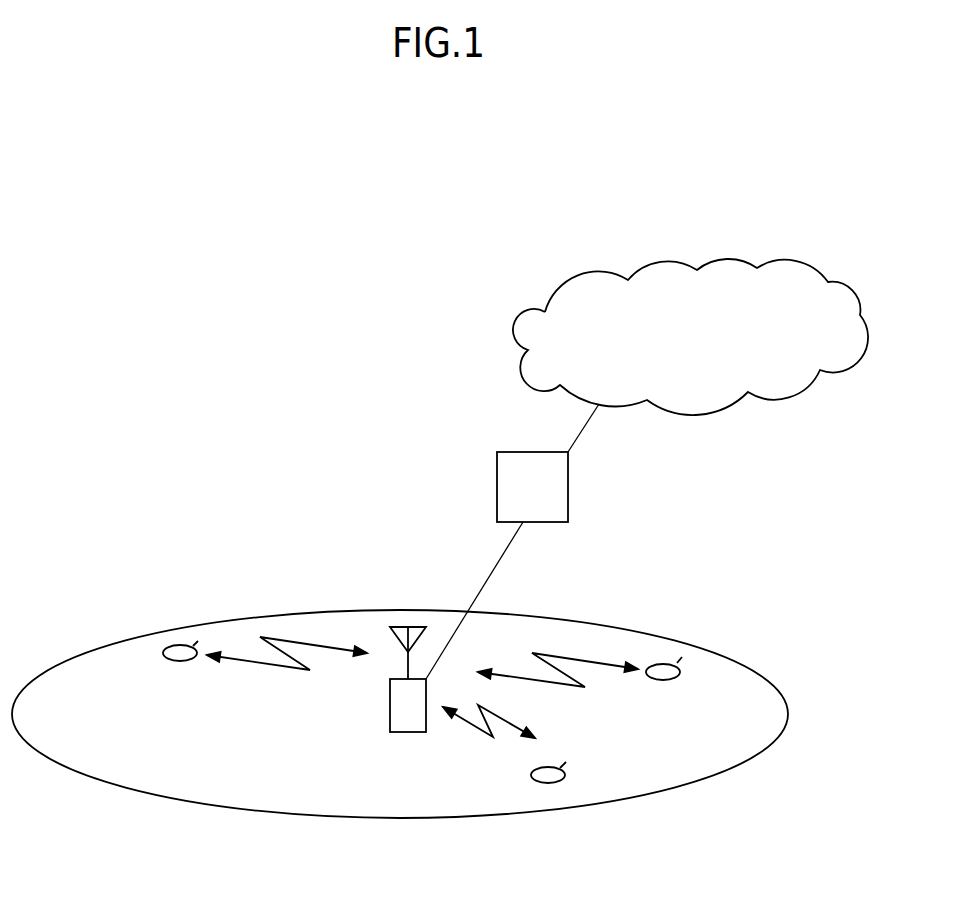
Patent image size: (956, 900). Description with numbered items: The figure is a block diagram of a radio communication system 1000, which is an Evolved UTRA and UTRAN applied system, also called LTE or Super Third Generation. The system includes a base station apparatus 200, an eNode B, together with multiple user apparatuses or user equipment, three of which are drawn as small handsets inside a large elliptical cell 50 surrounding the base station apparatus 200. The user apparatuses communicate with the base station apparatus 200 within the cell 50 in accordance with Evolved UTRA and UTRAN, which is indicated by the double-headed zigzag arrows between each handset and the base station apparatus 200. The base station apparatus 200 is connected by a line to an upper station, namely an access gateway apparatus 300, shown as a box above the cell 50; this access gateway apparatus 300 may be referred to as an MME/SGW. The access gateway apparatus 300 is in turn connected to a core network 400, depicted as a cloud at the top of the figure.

The radio communication system 1000 is at (182, 300).
The cell 50 is at (645, 797).
The base station apparatus 200 is at (390, 712).
The access gateway apparatus 300 is at (568, 486).
The core network 400 is at (735, 259).